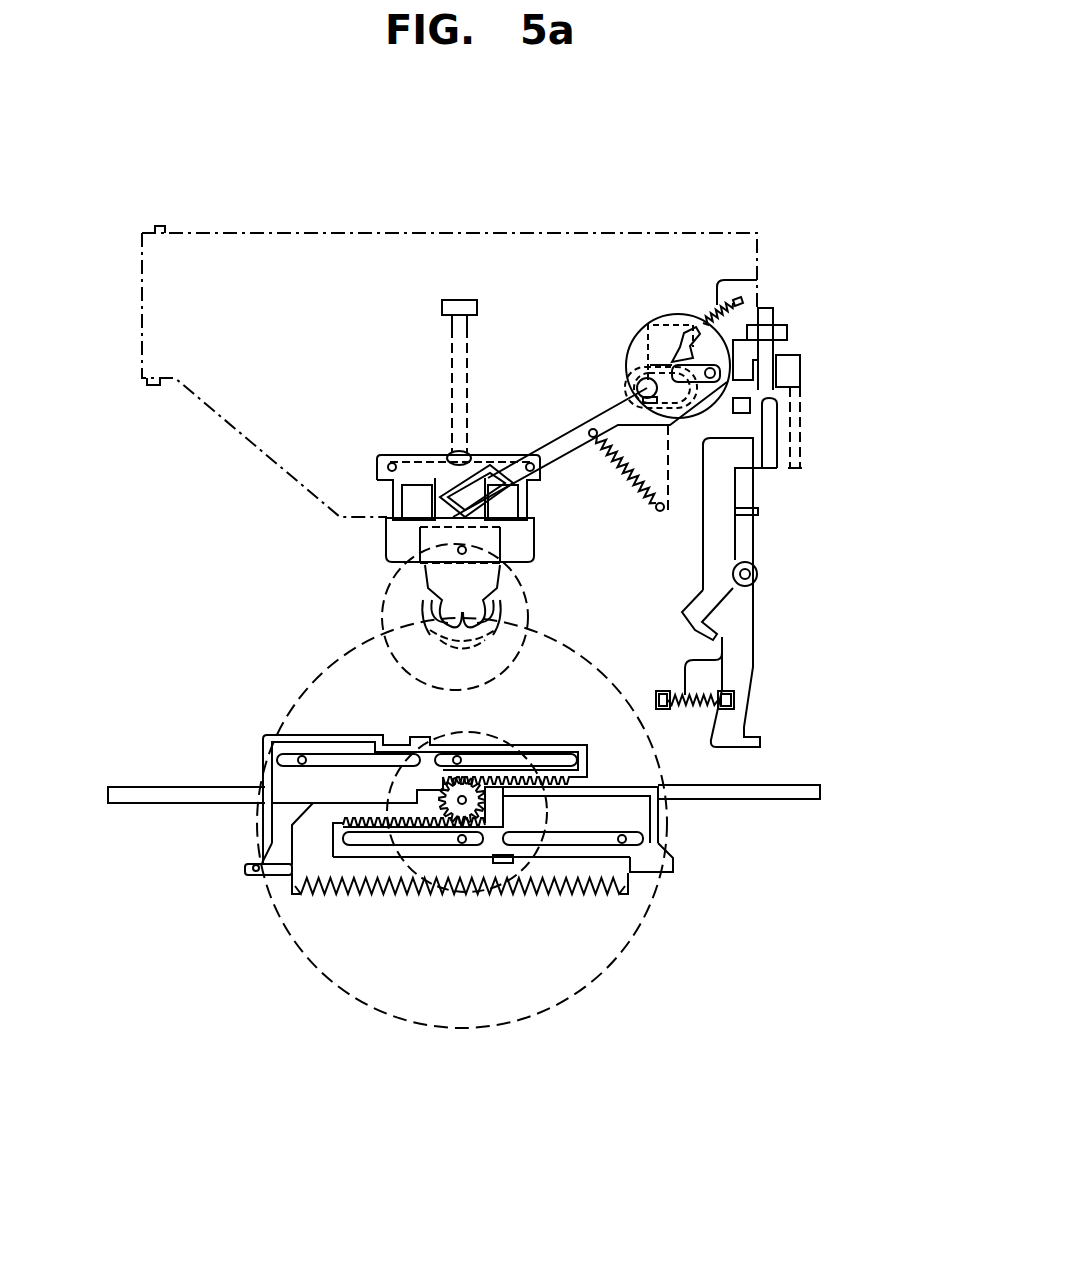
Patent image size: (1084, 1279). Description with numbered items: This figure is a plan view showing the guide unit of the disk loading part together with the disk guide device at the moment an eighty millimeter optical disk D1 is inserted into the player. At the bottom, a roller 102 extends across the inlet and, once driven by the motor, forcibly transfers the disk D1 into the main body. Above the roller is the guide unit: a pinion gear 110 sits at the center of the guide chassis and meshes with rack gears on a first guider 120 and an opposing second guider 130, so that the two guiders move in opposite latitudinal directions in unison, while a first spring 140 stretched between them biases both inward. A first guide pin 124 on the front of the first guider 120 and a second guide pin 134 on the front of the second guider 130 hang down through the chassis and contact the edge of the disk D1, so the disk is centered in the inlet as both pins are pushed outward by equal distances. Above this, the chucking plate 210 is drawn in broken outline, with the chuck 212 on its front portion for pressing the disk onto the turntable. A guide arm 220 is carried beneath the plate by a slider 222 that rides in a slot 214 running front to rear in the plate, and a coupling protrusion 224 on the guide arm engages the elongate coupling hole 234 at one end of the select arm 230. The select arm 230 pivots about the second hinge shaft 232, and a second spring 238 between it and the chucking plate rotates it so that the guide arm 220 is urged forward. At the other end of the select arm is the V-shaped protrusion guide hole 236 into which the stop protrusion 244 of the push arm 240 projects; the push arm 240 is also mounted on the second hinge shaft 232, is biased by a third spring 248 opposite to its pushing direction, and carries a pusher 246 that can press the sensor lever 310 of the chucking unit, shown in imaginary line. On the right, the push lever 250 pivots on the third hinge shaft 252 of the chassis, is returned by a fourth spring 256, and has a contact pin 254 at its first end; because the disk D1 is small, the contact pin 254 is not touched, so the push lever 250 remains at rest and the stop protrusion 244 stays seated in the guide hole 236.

The roller 102 is at (140, 793).
The pinion gear 110 is at (463, 880).
The first guider 120 is at (313, 743).
The first guide pin 124 is at (247, 863).
The second guider 130 is at (637, 822).
The second guide pin 134 is at (673, 855).
The first spring 140 is at (347, 885).
The chucking plate 210 is at (302, 248).
The chuck 212 is at (415, 622).
The slot 214 is at (460, 353).
The guide arm 220 is at (413, 473).
The slider 222 is at (447, 457).
The coupling protrusion 224 is at (443, 497).
The select arm 230 is at (603, 405).
The second hinge shaft 232 is at (623, 397).
The elongate coupling hole 234 is at (489, 475).
The protrusion guide hole 236 is at (665, 313).
The second spring 238 is at (688, 481).
The push arm 240 is at (770, 318).
The stop protrusion 244 is at (777, 440).
The pusher 246 is at (775, 345).
The third spring 248 is at (728, 315).
The push lever 250 is at (715, 533).
The third hinge shaft 252 is at (757, 573).
The contact pin 254 is at (760, 742).
The fourth spring 256 is at (757, 657).
The sensor lever 310 is at (790, 370).
The 80 mm optical disk D1 is at (447, 1000).